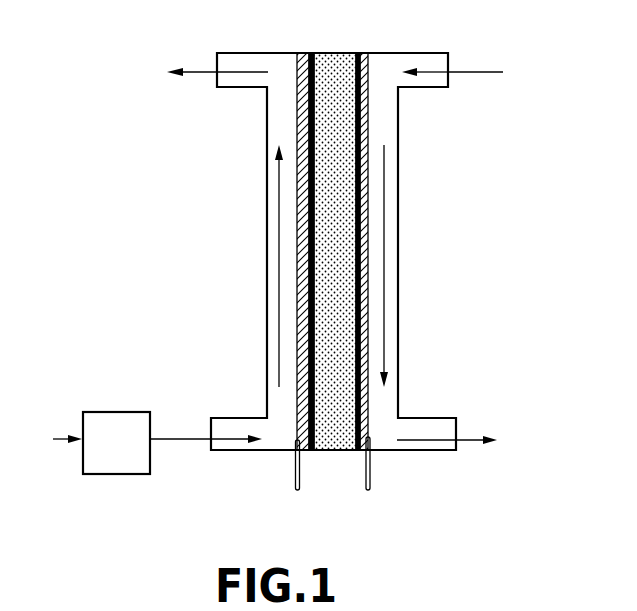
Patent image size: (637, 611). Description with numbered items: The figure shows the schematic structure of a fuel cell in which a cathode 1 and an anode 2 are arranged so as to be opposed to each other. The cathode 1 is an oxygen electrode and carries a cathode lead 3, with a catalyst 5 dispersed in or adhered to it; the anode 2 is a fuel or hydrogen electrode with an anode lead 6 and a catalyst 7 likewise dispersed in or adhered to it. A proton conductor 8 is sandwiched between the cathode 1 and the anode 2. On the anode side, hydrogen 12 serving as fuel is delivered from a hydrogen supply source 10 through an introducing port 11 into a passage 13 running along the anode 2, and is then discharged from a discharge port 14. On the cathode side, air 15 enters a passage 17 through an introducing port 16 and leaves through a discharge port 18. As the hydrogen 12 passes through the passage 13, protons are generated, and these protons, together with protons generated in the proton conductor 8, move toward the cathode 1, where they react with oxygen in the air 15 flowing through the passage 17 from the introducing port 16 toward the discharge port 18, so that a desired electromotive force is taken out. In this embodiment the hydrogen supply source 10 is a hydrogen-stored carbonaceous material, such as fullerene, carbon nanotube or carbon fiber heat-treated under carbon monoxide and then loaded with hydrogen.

The cathode 1 is at (366, 110).
The anode 2 is at (298, 206).
The cathode lead 3 is at (372, 470).
The catalyst 5 is at (366, 170).
The anode lead 6 is at (301, 470).
The catalyst 7 is at (298, 105).
The proton conductor 8 is at (340, 62).
The hydrogen supply source 10 is at (118, 421).
The introducing port 11 is at (232, 451).
The hydrogen 12 is at (180, 437).
The passage 13 is at (287, 287).
The discharge port 14 is at (232, 62).
The air 15 is at (487, 74).
The introducing port 16 is at (428, 62).
The passage 17 is at (376, 298).
The discharge port 18 is at (433, 428).